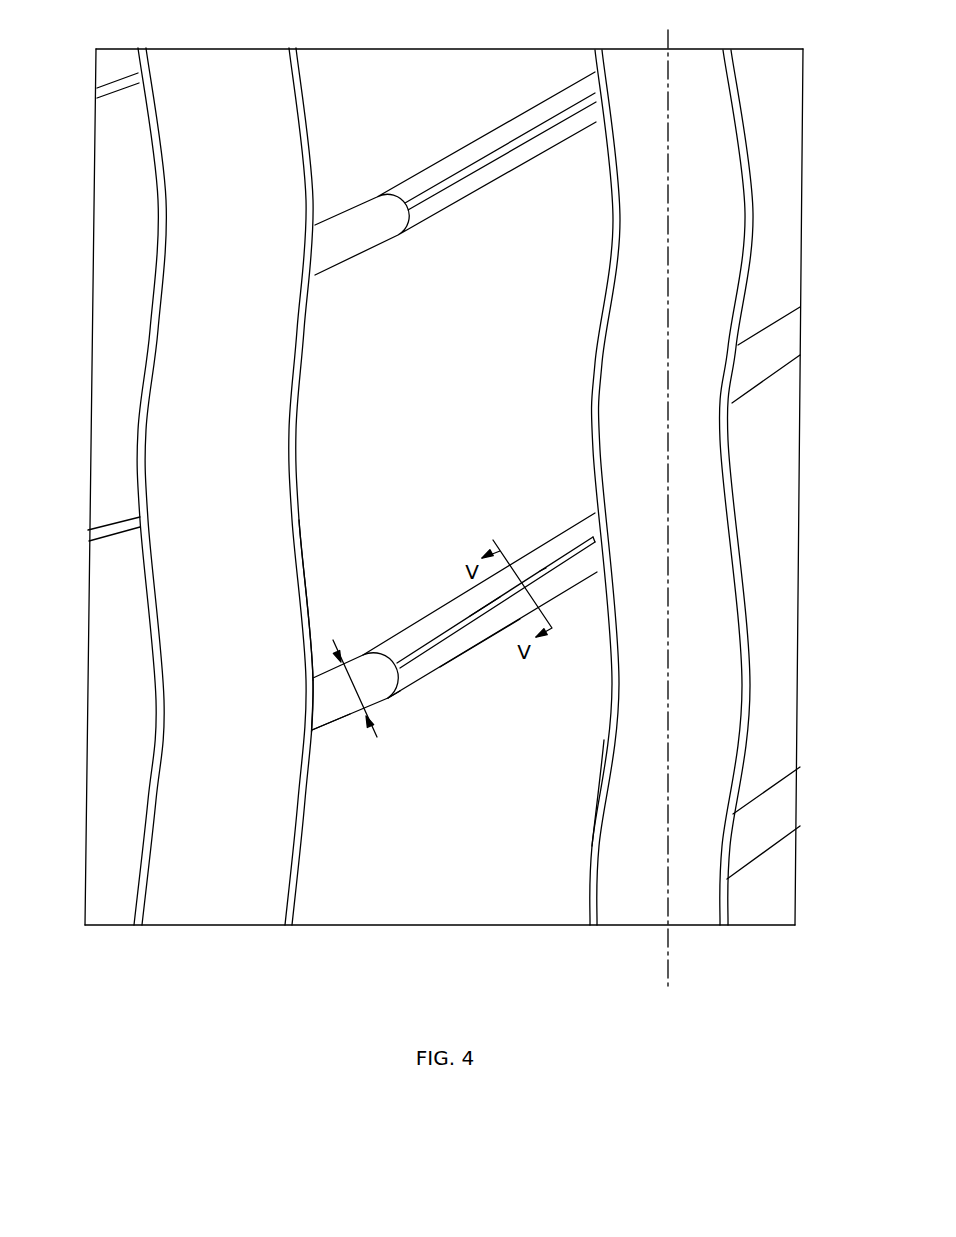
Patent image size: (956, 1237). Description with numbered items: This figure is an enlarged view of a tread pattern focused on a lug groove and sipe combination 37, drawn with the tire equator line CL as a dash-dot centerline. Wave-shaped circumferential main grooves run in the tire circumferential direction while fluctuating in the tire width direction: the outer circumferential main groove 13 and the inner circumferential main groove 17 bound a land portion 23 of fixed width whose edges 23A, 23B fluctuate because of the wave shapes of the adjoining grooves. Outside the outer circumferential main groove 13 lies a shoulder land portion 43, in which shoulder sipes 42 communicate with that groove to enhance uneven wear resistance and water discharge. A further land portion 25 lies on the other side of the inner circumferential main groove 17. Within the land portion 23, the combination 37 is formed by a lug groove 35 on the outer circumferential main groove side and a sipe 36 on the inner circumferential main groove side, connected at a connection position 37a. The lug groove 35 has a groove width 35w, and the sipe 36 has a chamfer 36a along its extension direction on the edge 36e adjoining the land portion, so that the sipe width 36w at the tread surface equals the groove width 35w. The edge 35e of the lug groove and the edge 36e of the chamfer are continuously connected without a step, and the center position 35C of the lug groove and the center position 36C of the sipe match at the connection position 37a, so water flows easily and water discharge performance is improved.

The tire equator line CL is at (668, 499).
The shoulder land portion 43 is at (110, 925).
The shoulder sipe 42 is at (118, 535).
The outer circumferential main groove 13 is at (227, 925).
The land portion 23 is at (447, 925).
The edge of land portion 23A is at (604, 792).
The edge of land portion 23B is at (292, 530).
The inner circumferential main groove 17 is at (634, 925).
The shoulder land portion 25 is at (770, 925).
The lug groove 35 is at (365, 713).
The groove width 35w is at (333, 640).
The edge of lug groove 35e is at (312, 703).
The center position of lug groove 35C is at (322, 703).
The sipe 36 is at (573, 589).
The chamfer 36a is at (418, 632).
The sipe width 36w is at (543, 545).
The edge of sipe 36e is at (602, 548).
The center position of sipe 36C is at (485, 625).
The lug groove and sipe combination 37 is at (505, 712).
The connection position 37a is at (403, 687).